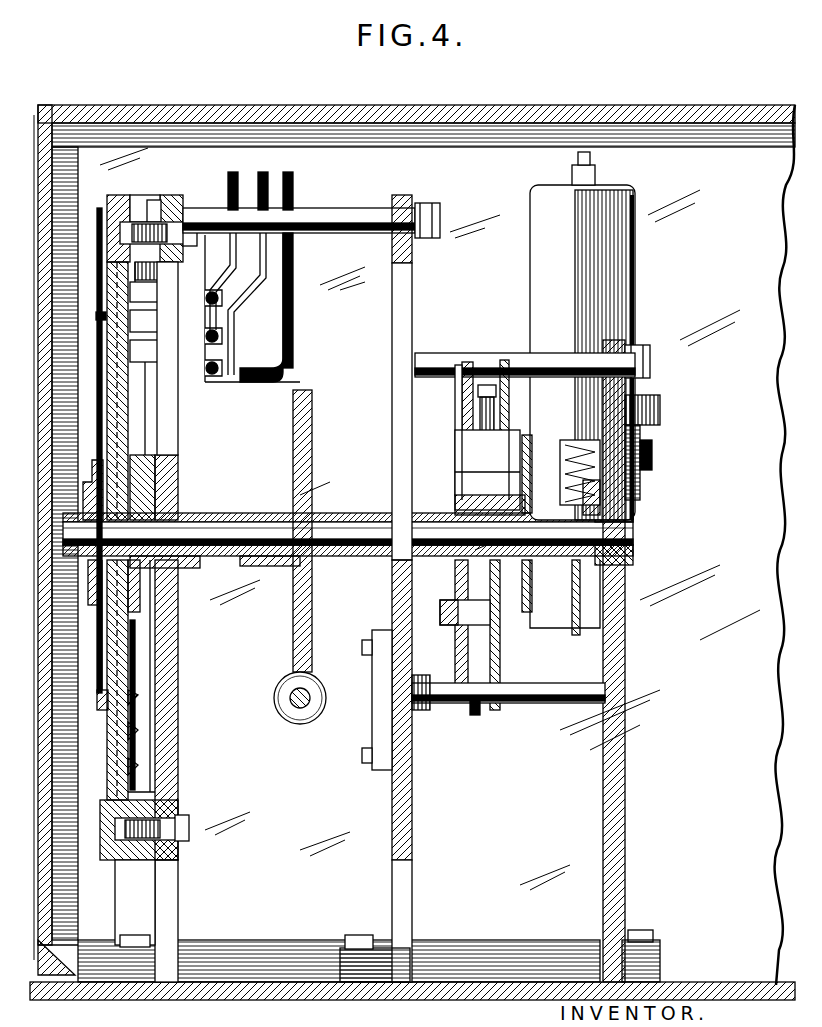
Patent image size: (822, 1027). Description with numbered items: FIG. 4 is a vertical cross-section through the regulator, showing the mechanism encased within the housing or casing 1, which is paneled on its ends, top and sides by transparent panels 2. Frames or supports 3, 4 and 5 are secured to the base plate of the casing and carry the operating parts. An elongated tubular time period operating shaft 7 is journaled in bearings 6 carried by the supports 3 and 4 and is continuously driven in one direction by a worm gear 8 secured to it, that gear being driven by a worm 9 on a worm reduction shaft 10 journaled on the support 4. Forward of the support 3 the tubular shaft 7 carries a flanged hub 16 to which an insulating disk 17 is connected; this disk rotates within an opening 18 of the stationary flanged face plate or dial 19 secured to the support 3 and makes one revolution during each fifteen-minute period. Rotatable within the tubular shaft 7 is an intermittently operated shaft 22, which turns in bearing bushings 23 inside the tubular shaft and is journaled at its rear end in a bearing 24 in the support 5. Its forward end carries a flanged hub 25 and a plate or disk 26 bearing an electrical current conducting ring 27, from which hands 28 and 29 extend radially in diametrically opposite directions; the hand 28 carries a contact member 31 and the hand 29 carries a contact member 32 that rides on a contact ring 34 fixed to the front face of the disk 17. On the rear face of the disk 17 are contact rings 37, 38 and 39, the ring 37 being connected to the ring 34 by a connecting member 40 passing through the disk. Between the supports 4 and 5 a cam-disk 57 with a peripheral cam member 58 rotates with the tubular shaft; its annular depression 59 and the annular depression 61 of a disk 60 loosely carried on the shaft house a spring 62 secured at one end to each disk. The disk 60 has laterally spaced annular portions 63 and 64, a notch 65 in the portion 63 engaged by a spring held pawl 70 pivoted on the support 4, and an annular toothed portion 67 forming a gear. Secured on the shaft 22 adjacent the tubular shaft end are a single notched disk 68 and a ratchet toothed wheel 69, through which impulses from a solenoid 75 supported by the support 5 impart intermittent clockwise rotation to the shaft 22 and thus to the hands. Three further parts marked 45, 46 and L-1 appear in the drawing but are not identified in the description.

The housing or casing 1 is at (390, 982).
The transparent panels 2 is at (780, 258).
The support 3 is at (172, 905).
The support 4 is at (405, 898).
The support 5 is at (622, 897).
The bearings 6 is at (172, 558).
The tubular time period operating shaft 7 is at (290, 556).
The worm gear 8 is at (312, 630).
The worm 9 is at (282, 708).
The worm reduction shaft 10 is at (320, 697).
The flanged hub 16 is at (140, 600).
The disk 17 is at (140, 790).
The opening 18 is at (108, 812).
The flanged face plate or dial 19 is at (112, 885).
The intermittently operated shaft 22 is at (207, 530).
The bearing bushings 23 is at (145, 497).
The bearing 24 is at (634, 548).
The flanged hub 25 is at (42, 575).
The plate or disk 26 is at (95, 470).
The electrical current conducting ring 27 is at (92, 605).
The hand 28 is at (99, 212).
The hand 29 is at (100, 668).
The contact member 31 is at (97, 318).
The contact member 32 is at (98, 705).
The contact ring 34 is at (112, 372).
The contact ring 37 is at (138, 698).
The contact ring 38 is at (138, 731).
The contact ring 39 is at (138, 764).
The connecting member 40 is at (132, 370).
The wire 45 is at (232, 172).
The wire 46 is at (268, 168).
The line wire L-1 is at (294, 185).
The cam-disk 57 is at (458, 410).
The cam member 58 is at (462, 372).
The annular depression 59 is at (456, 624).
The disk 60 is at (500, 622).
The annular depression 61 is at (458, 652).
The spring 62 is at (456, 462).
The annular portion 63 is at (490, 384).
The annular portion 64 is at (467, 362).
The notch 65 is at (500, 380).
The annular toothed portion 67 is at (527, 373).
The single notched disk 68 is at (532, 462).
The ratchet toothed wheel 69 is at (565, 497).
The spring held pawl 70 is at (474, 706).
The solenoid 75 is at (637, 268).